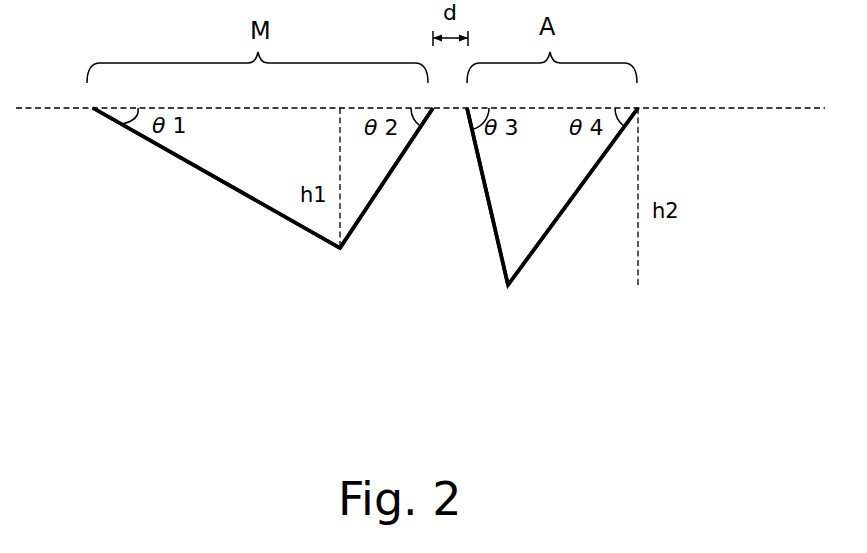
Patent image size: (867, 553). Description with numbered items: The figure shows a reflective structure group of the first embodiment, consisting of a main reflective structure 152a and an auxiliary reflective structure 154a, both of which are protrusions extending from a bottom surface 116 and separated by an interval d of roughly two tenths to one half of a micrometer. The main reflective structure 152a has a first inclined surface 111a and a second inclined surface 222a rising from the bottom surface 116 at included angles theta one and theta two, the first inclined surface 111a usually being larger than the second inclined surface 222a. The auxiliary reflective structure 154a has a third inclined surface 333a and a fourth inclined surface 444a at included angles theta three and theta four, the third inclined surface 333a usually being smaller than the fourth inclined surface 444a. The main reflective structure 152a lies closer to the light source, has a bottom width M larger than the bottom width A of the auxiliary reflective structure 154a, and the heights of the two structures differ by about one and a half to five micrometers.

The bottom surface 116 is at (745, 108).
The main reflective structure 152a is at (143, 155).
The first inclined surface 111a is at (218, 178).
The second inclined surface 222a is at (367, 212).
The auxiliary reflective structure 154a is at (503, 297).
The third inclined surface 333a is at (495, 238).
The fourth inclined surface 444a is at (540, 247).